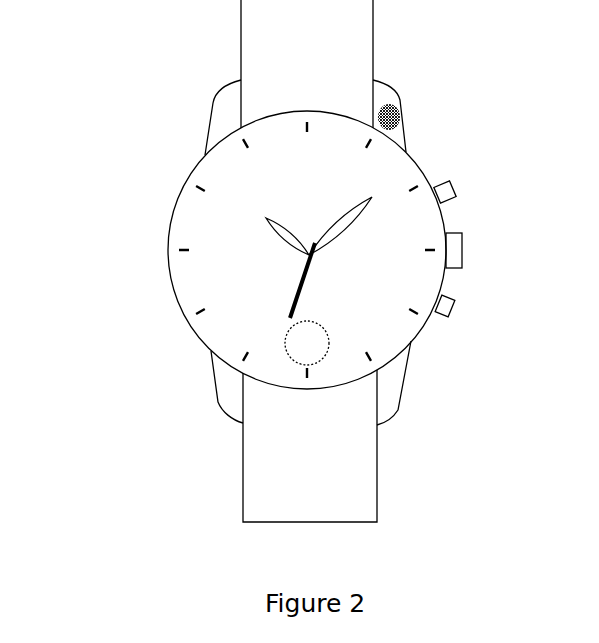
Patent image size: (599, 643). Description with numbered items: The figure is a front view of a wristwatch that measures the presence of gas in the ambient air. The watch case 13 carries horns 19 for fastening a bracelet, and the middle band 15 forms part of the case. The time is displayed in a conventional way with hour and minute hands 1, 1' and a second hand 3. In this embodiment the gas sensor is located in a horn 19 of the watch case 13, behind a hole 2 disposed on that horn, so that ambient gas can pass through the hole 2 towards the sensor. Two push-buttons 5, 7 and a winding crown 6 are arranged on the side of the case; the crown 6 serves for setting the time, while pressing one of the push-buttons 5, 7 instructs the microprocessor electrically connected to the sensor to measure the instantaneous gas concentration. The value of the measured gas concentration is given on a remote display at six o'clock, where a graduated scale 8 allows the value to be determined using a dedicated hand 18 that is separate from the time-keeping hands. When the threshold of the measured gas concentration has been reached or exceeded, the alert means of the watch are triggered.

The hour hand 1 is at (209, 236).
The minute hand 1' is at (231, 242).
The hole 2 is at (393, 113).
The second hand 3 is at (298, 288).
The push-button 5 is at (445, 182).
The winding crown 6 is at (448, 238).
The push-button 7 is at (442, 300).
The graduated scale 8 is at (288, 352).
The watch case 13 is at (195, 167).
The middle band 15 is at (418, 340).
The dedicated hand 18 is at (307, 333).
The horn 19 is at (382, 95).